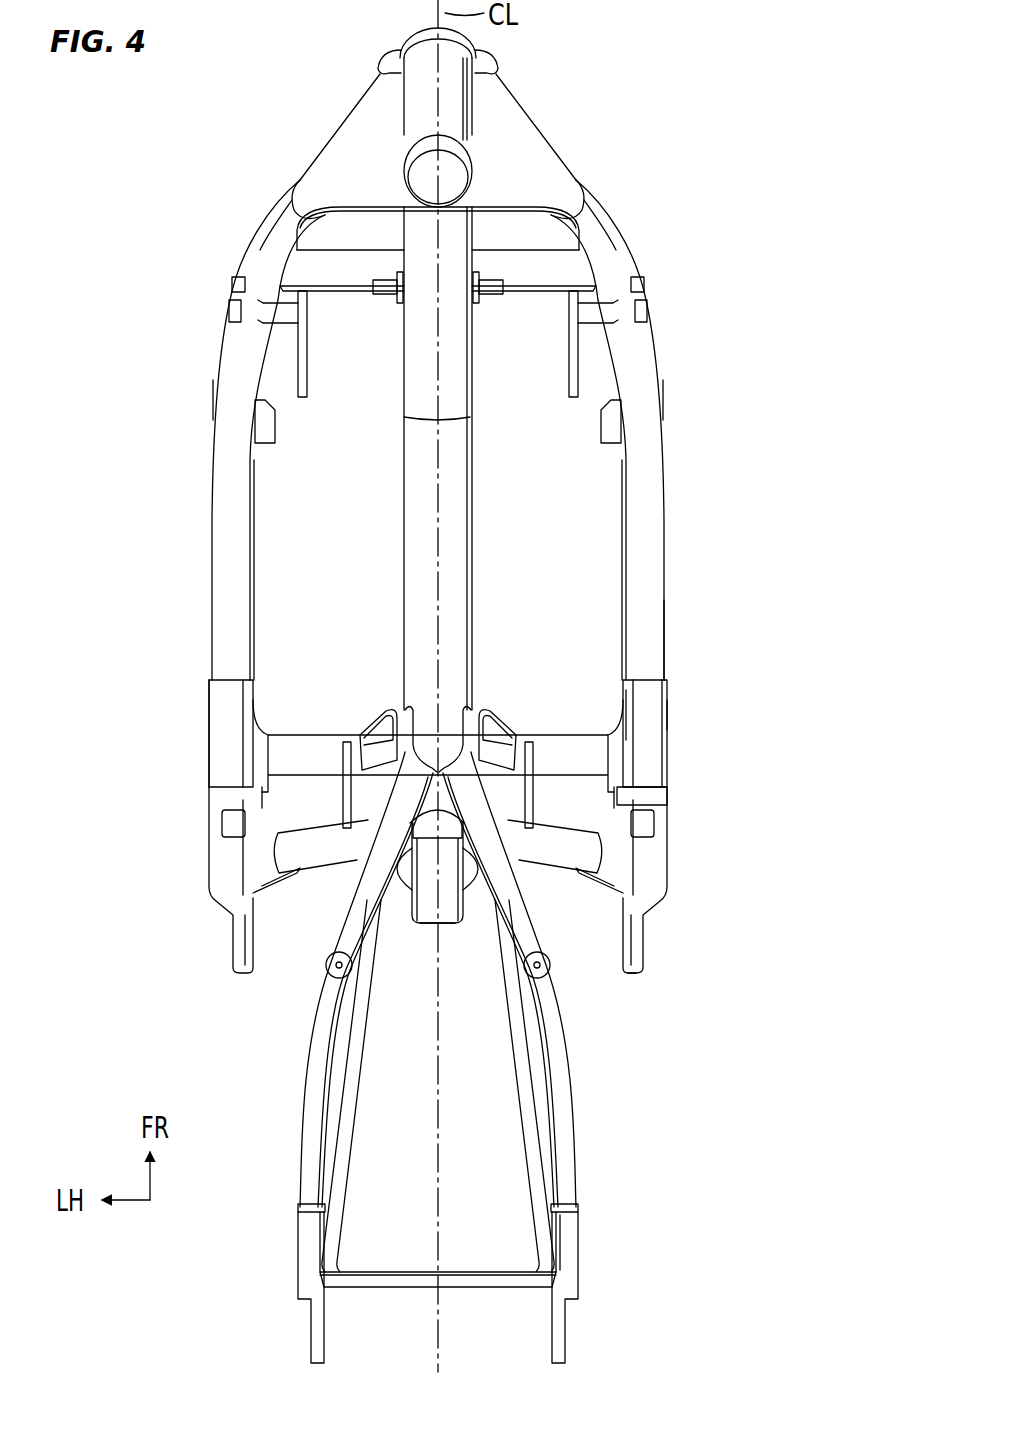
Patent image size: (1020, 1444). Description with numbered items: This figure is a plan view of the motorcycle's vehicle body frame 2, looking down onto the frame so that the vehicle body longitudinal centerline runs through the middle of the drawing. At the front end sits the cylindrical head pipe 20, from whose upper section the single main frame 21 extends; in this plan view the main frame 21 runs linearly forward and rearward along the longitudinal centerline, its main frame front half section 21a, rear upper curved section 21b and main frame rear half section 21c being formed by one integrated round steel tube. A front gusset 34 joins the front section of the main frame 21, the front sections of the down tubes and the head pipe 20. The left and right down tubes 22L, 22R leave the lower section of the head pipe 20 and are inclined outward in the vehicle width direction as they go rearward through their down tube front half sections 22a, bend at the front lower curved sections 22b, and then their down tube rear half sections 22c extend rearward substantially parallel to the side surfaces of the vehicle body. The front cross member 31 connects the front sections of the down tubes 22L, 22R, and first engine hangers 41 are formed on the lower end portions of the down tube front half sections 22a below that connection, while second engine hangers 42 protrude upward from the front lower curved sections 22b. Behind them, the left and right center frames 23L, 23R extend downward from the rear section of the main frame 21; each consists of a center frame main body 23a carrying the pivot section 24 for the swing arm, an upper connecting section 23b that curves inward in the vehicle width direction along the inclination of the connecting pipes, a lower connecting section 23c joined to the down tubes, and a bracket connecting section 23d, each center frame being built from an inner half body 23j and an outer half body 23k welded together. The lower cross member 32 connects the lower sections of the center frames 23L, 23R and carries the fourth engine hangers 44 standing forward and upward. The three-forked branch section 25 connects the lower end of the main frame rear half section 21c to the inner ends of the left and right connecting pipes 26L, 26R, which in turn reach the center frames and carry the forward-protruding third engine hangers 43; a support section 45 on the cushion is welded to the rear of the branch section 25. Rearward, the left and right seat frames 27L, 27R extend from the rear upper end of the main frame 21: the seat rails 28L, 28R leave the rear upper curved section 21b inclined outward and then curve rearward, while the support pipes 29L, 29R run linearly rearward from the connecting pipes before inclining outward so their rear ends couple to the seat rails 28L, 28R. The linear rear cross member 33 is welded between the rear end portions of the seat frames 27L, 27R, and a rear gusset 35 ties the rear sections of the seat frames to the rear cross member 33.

The vehicle body frame 2 is at (666, 100).
The head pipe 20 is at (452, 104).
The main frame 21 is at (480, 550).
The main frame front half section 21a is at (460, 437).
The rear upper curved section 21b is at (460, 713).
The main frame rear half section 21c is at (432, 813).
The left down tube 22L is at (207, 516).
The right down tube 22R is at (669, 516).
The down tube front half section 22a is at (607, 222).
The front lower curved section 22b is at (230, 382).
The down tube rear half section 22c is at (652, 662).
The left center frame 23L is at (204, 760).
The right center frame 23R is at (672, 757).
The center frame main body 23a is at (670, 780).
The upper connecting section 23b is at (602, 878).
The lower connecting section 23c is at (652, 692).
The bracket connecting section 23d is at (642, 965).
The inner half body 23j is at (626, 702).
The outer half body 23k is at (672, 716).
The pivot section 24 is at (240, 826).
The branch section 25 is at (468, 850).
The left connecting pipe 26L is at (310, 836).
The right connecting pipe 26R is at (578, 832).
The left seat frame 27L is at (294, 1188).
The right seat frame 27R is at (583, 1188).
The left seat rail 28L is at (317, 1060).
The right seat rail 28R is at (560, 1060).
The left support pipe 29L is at (340, 1097).
The right support pipe 29R is at (538, 1097).
The front cross member 31 is at (572, 270).
The lower cross member 32 is at (298, 745).
The rear cross member 33 is at (385, 1284).
The front gusset 34 is at (530, 162).
The rear gusset 35 is at (572, 1256).
The first engine hanger 41 is at (303, 398).
The second engine hanger 42 is at (266, 445).
The third engine hanger 43 is at (346, 745).
The fourth engine hanger 44 is at (385, 708).
The support section on the cushion 45 is at (430, 925).